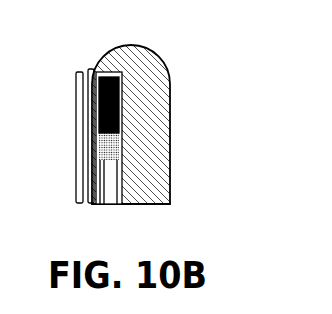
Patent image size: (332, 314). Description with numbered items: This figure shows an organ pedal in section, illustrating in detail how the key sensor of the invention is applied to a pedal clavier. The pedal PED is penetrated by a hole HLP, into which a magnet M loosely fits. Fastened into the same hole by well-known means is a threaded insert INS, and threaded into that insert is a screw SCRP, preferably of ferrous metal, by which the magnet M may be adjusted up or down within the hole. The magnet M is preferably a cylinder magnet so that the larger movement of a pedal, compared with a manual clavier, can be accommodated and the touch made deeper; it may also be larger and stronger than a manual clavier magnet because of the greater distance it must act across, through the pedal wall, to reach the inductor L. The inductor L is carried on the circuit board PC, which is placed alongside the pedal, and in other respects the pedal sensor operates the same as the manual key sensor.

The pedal PED is at (163, 113).
The magnet M is at (97, 72).
The screw SCRP is at (105, 150).
The threaded insert INS is at (110, 192).
The hole HLP is at (115, 205).
The inductor L is at (86, 100).
The circuit board PC is at (88, 110).